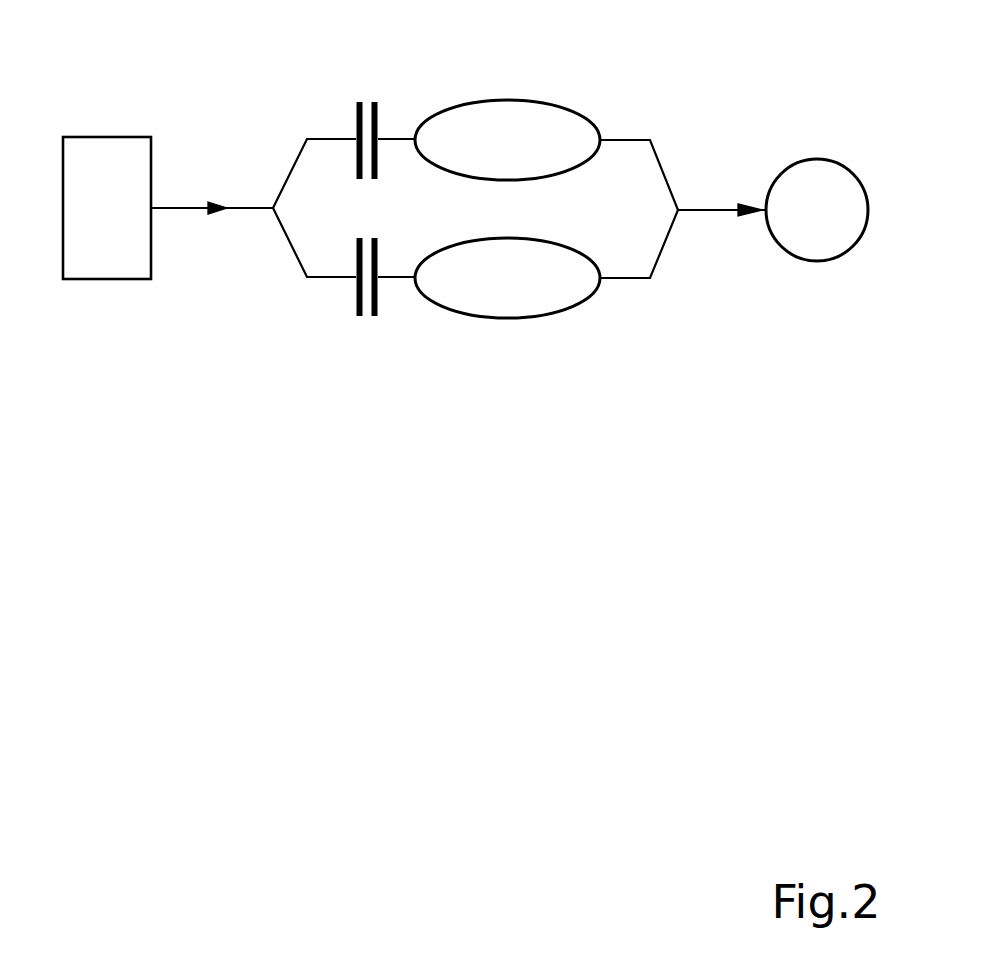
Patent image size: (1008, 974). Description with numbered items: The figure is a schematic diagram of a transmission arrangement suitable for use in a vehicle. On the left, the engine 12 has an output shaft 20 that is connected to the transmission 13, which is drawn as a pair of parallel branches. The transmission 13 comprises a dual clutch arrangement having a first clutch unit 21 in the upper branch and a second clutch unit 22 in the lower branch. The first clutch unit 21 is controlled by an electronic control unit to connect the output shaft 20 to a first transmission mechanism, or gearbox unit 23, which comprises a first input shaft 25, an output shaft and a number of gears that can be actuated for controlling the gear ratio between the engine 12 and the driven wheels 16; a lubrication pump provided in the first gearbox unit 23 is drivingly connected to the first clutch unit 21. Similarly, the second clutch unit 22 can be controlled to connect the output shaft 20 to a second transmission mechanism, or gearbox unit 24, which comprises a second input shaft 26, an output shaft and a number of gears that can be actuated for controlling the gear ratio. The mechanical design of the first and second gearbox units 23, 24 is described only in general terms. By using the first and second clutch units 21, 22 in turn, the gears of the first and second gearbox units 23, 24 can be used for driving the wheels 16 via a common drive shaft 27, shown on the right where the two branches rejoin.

The engine 12 is at (107, 136).
The transmission 13 is at (652, 111).
The driven wheels 16 is at (817, 160).
The output shaft 20 is at (173, 208).
The first clutch unit 21 is at (356, 118).
The second clutch unit 22 is at (353, 298).
The first gearbox unit 23 is at (533, 100).
The second gearbox unit 24 is at (515, 318).
The first input shaft 25 is at (393, 137).
The second input shaft 26 is at (393, 280).
The drive shaft 27 is at (710, 210).